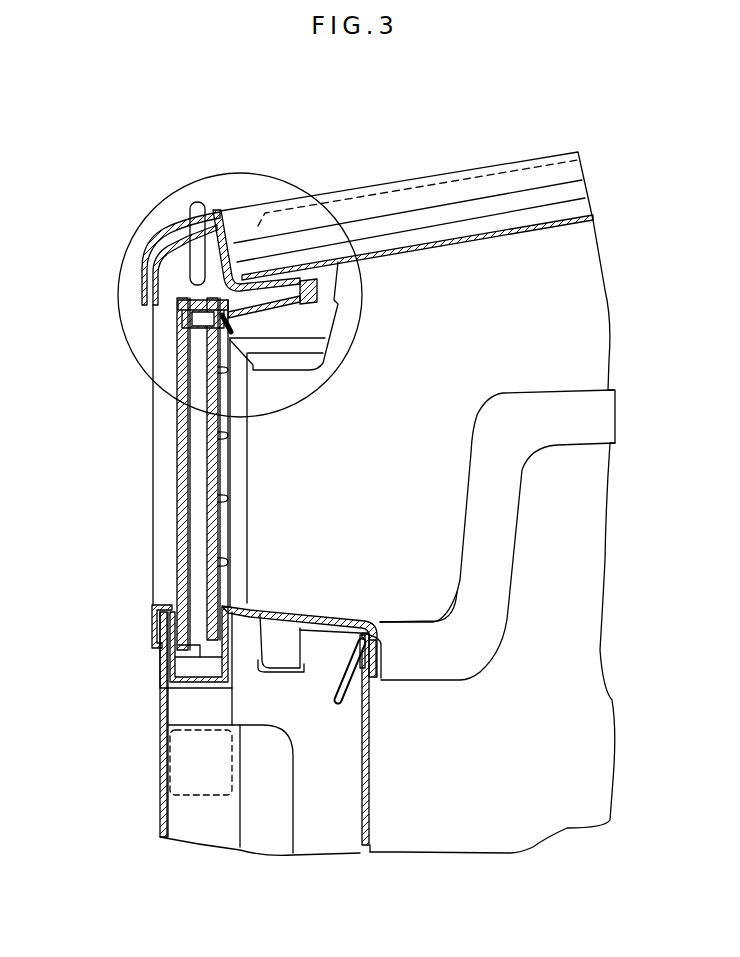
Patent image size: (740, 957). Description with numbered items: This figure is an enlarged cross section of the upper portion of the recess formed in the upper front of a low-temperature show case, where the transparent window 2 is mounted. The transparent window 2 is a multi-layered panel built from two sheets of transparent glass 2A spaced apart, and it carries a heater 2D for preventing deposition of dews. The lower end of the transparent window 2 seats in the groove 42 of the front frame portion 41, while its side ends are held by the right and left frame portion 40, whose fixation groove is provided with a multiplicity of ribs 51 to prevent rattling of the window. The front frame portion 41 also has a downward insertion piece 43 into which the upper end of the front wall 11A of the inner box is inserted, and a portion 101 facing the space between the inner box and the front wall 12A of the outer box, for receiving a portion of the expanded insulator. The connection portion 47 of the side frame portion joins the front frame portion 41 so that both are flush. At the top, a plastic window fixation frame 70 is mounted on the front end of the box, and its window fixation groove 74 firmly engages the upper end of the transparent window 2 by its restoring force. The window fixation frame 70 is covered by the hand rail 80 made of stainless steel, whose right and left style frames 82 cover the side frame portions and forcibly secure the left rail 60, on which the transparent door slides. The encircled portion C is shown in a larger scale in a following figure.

The portion C is at (357, 307).
The left rail 60 is at (370, 218).
The right and left style frames 82 is at (232, 210).
The hand rail 80 is at (148, 257).
The window fixation groove 74 is at (170, 296).
The window fixation frame 70 is at (173, 232).
The transparent window 2 is at (177, 493).
The transparent glass 2A is at (180, 563).
The ribs 51 is at (223, 438).
The right and left frame portion 40 is at (440, 494).
The front frame portion 41 is at (315, 614).
The connection portion 47 is at (333, 648).
The portion facing the space 101 is at (248, 616).
The groove 42 is at (163, 690).
The heater 2D is at (173, 655).
The front wall of the outer box 12A is at (158, 723).
The front wall of the inner box 11A is at (370, 763).
The downward insertion piece 43 is at (347, 690).